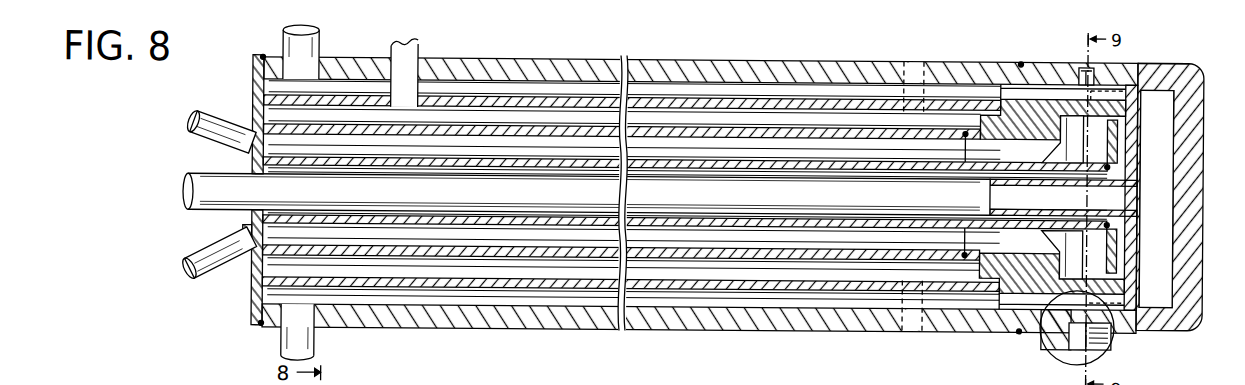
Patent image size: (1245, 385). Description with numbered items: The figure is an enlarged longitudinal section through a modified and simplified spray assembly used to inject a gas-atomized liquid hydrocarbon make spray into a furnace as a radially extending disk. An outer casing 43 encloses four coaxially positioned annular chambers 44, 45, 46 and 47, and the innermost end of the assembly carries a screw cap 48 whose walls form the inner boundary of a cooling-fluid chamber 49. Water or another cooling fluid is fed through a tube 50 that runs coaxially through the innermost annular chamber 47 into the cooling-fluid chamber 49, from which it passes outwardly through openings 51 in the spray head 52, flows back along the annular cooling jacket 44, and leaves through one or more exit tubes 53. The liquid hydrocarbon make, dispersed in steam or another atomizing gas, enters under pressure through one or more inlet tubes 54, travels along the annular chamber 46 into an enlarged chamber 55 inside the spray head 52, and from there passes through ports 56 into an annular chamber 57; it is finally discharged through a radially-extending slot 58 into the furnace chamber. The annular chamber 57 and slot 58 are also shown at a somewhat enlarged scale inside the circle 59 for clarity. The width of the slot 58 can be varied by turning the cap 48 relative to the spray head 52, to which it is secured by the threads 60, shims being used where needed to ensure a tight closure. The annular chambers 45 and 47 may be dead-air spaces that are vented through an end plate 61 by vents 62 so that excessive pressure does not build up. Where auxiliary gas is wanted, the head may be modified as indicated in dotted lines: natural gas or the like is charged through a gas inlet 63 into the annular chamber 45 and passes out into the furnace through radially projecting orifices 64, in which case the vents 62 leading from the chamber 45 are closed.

The outer casing 43 is at (532, 322).
The annular cooling jacket 44 is at (468, 303).
The annular chamber 45 is at (432, 275).
The annular chamber 46 is at (395, 243).
The annular chamber 47 is at (370, 223).
The screw cap 48 is at (1190, 217).
The cooling-fluid chamber 49 is at (1165, 164).
The tube 50 is at (197, 199).
The openings 51 is at (1021, 63).
The spray head 52 is at (1050, 97).
The exit tubes 53 is at (316, 48).
The inlet tubes 54 is at (210, 118).
The enlarged chamber 55 is at (1062, 262).
The ports 56 is at (1170, 75).
The annular chamber 57 is at (1092, 67).
The radially-extending slot 58 is at (1082, 66).
The circle 59 is at (1104, 344).
The threads 60 is at (1137, 74).
The end plate 61 is at (252, 305).
The vents 62 is at (252, 275).
The gas inlet 63 is at (416, 50).
The radially projecting orifices 64 is at (920, 62).